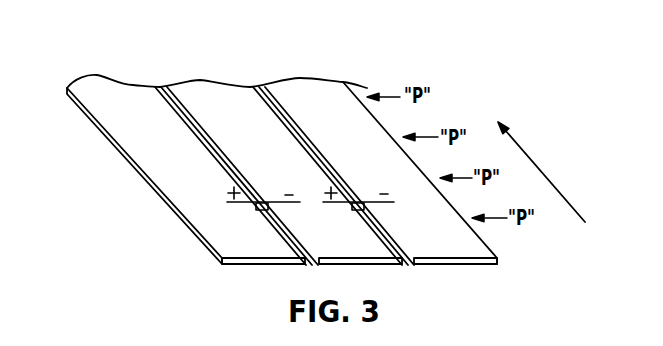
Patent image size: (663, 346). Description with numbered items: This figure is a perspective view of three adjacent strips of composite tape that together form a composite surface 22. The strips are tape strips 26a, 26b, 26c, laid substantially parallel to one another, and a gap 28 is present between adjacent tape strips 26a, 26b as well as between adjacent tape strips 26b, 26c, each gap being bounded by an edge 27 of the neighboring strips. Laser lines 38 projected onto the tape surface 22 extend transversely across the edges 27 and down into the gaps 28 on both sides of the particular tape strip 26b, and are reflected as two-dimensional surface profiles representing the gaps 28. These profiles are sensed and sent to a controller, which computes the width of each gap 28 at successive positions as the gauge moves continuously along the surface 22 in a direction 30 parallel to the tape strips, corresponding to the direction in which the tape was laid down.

The composite surface 22 is at (404, 70).
The tape strip 26a is at (120, 103).
The tape strip 26b is at (214, 103).
The tape strip 26c is at (309, 103).
The edge 27 is at (390, 120).
The gap 28 is at (371, 236).
The direction 30 is at (547, 170).
The laser lines 38 is at (212, 192).